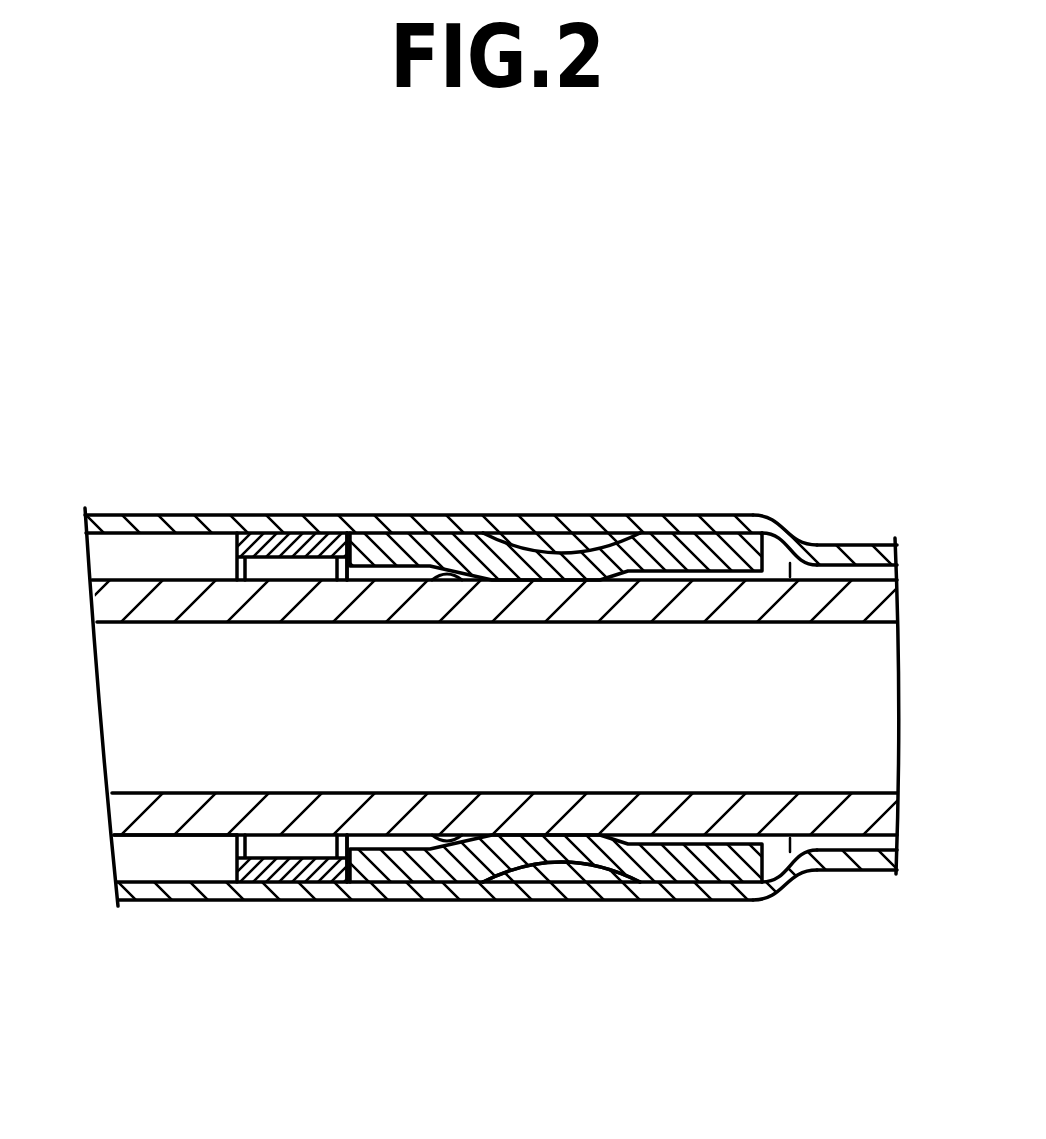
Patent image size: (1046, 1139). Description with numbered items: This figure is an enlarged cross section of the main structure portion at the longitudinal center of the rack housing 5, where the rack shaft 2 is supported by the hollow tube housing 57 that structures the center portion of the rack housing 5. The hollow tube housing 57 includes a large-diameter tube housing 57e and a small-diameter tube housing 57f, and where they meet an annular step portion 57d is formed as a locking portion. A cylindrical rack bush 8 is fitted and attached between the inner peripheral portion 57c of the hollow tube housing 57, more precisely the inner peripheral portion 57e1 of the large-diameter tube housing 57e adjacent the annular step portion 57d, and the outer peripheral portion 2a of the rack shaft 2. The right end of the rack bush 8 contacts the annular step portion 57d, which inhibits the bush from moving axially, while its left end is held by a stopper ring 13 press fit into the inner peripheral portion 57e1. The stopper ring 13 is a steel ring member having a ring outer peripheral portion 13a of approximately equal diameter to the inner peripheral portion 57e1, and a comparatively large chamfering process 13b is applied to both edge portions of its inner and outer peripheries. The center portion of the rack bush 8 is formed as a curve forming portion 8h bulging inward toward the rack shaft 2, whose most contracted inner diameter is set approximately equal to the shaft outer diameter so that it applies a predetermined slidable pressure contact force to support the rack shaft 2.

The rack shaft 2 is at (180, 820).
The outer peripheral portion 2a is at (205, 840).
The rack housing 5 is at (487, 902).
The rack bush 8 is at (648, 872).
The curve forming portion 8h is at (565, 862).
The stopper ring 13 is at (302, 535).
The ring outer peripheral portion 13a is at (345, 537).
The chamfering process 13b is at (348, 882).
The hollow tube housing 57 is at (118, 506).
The large-diameter tube housing 57e is at (197, 505).
The inner peripheral portion 57e1 is at (503, 533).
The inner peripheral portion 57c is at (568, 533).
The annular step portion 57d is at (790, 530).
The small-diameter tube housing 57f is at (880, 528).